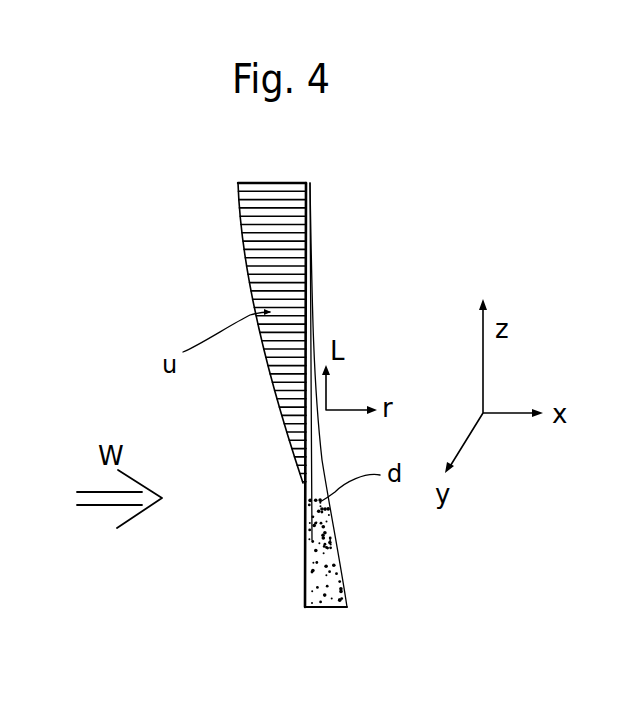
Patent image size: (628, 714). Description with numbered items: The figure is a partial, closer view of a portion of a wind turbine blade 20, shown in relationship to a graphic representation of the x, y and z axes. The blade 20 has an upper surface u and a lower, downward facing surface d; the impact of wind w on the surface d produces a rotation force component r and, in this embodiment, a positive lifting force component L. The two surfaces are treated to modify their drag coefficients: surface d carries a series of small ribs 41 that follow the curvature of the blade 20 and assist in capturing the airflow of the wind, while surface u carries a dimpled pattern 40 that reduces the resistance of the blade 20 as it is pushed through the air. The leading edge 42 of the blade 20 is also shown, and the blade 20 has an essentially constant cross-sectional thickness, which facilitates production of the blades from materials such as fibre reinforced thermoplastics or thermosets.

The blade 20 is at (324, 403).
The dimpled pattern 40 is at (347, 597).
The small ribs 41 is at (227, 385).
The leading edge 42 is at (312, 197).